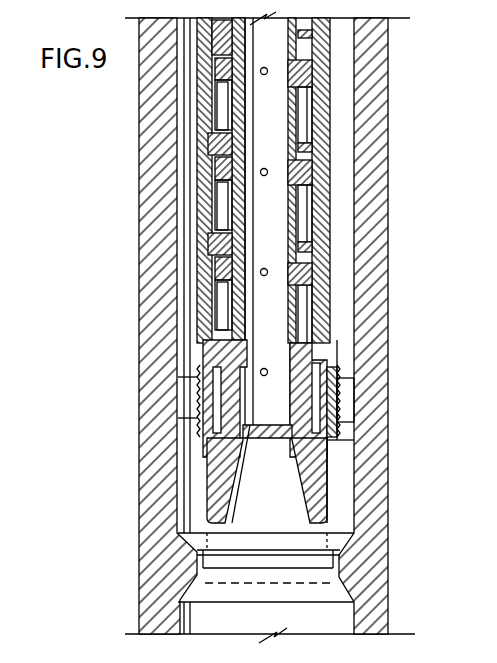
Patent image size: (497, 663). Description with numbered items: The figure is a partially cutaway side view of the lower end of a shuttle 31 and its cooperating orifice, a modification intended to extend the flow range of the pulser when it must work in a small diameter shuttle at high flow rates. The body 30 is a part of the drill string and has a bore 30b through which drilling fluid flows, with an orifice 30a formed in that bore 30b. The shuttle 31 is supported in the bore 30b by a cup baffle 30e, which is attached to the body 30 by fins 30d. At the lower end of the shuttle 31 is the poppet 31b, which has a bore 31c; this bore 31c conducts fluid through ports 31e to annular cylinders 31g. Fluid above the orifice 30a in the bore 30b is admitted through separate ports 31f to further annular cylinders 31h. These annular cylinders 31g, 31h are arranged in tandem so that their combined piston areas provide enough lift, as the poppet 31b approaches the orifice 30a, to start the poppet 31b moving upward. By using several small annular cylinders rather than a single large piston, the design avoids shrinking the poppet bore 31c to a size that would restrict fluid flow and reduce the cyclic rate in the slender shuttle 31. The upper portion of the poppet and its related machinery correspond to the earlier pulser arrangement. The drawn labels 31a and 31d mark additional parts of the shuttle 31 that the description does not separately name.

The body 30 is at (247, 326).
The orifice 30a is at (252, 563).
The bore 30b is at (354, 322).
The fins 30d is at (345, 396).
The cup baffle 30e is at (337, 436).
The shuttle 31 is at (315, 180).
The inner tube wall 31a is at (330, 176).
The poppet 31b is at (328, 486).
The bore 31c is at (281, 494).
The lower key block 31d is at (327, 279).
The ports 31e is at (246, 369).
The ports 31f is at (197, 341).
The annular cylinders 31g is at (305, 259).
The annular cylinders 31h is at (300, 143).